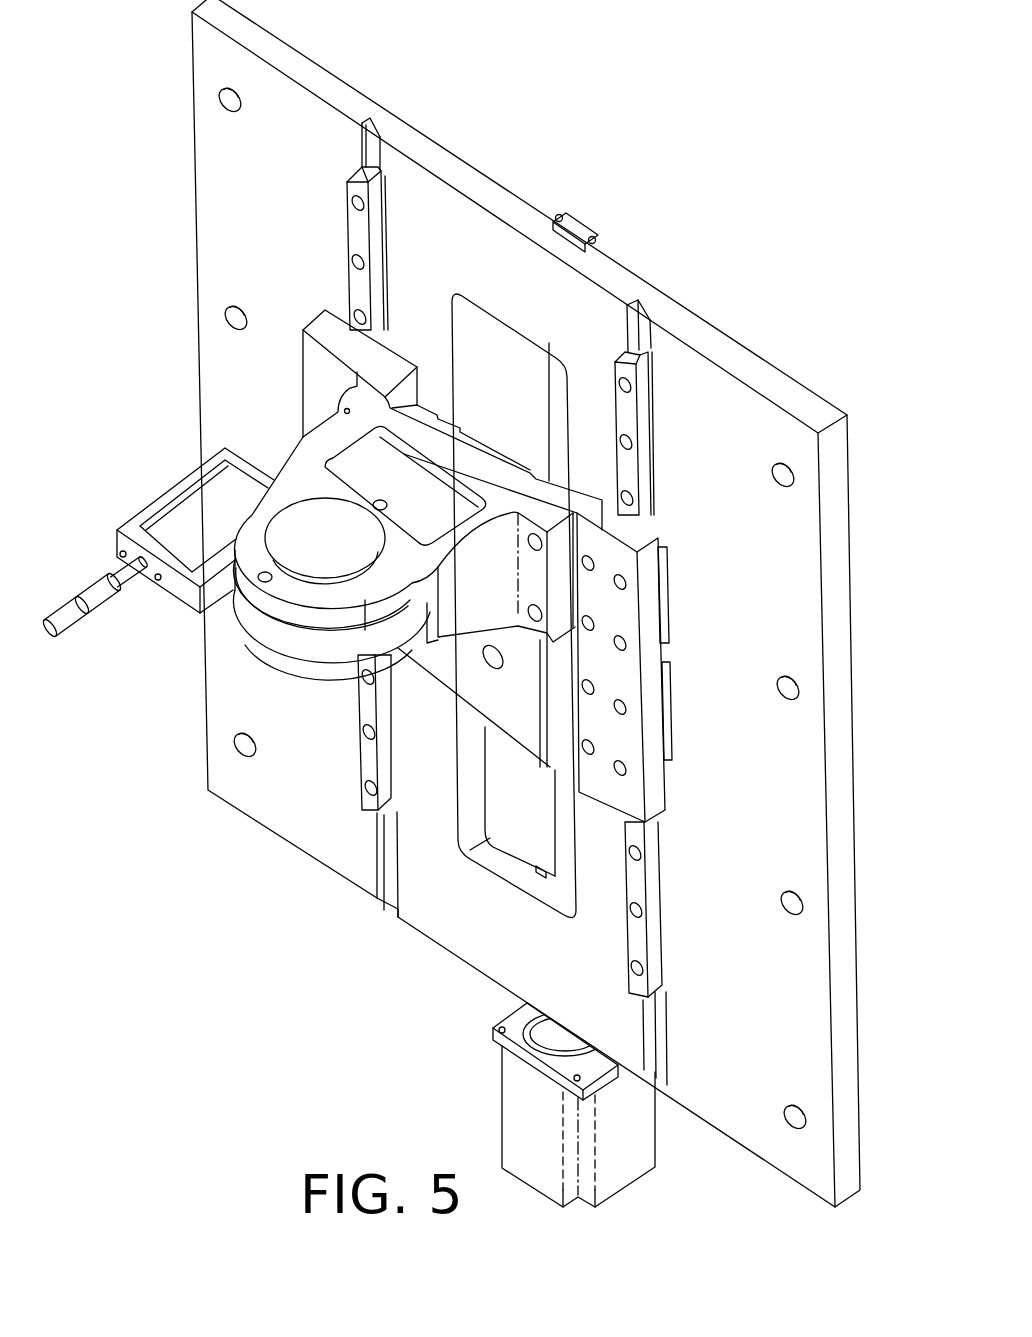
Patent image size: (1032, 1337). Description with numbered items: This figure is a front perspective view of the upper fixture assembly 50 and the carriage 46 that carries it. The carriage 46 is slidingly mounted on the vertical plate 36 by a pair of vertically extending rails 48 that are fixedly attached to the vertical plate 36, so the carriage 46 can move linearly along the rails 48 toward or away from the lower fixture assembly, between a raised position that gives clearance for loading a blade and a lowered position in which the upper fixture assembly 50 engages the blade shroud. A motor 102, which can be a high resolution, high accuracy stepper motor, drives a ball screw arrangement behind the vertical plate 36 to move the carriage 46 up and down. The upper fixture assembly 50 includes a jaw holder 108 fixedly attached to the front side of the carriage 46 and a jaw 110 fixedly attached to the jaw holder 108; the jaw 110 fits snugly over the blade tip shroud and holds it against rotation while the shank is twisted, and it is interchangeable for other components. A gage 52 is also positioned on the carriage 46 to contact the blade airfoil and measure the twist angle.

The vertical plate 36 is at (837, 575).
The carriage 46 is at (650, 610).
The rails 48 is at (353, 228).
The upper fixture assembly 50 is at (250, 617).
The gage 52 is at (145, 508).
The motor 102 is at (518, 1115).
The jaw holder 108 is at (463, 617).
The jaw 110 is at (315, 663).